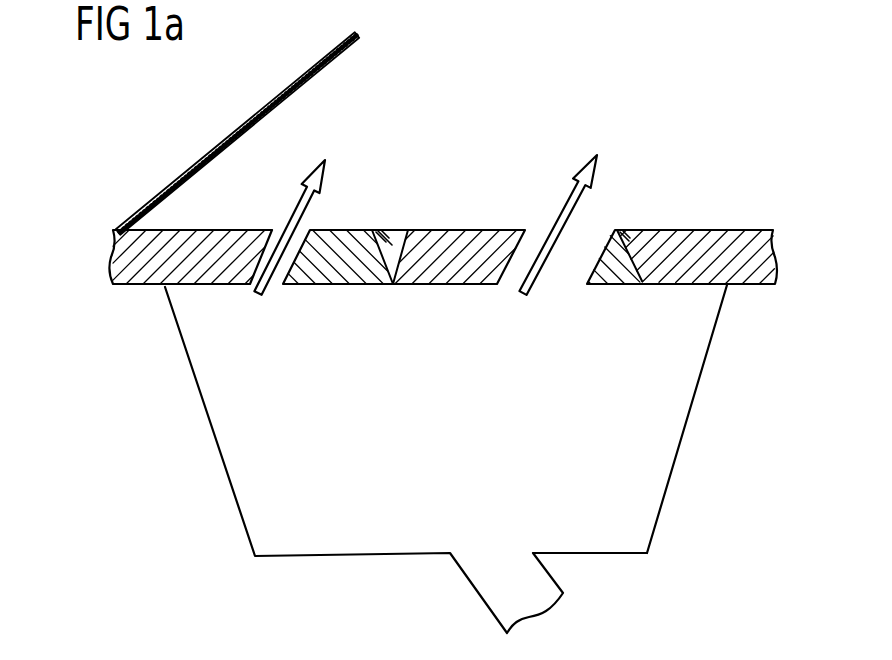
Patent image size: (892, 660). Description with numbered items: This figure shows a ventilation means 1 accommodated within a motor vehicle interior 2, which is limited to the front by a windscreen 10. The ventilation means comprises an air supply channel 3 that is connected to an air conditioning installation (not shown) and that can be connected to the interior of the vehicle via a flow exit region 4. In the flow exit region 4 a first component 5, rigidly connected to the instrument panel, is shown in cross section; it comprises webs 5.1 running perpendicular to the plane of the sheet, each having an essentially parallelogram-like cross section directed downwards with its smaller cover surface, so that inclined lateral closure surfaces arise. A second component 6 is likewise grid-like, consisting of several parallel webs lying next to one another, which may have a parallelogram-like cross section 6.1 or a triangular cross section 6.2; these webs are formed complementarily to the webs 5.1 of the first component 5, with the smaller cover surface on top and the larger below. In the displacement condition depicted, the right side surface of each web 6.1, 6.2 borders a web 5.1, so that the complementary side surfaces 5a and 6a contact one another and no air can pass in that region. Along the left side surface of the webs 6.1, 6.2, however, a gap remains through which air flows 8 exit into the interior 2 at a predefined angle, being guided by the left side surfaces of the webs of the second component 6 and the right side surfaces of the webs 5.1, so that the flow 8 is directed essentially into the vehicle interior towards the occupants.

The ventilation means 1 is at (173, 385).
The motor vehicle interior 2 is at (730, 54).
The air supply channel 3 is at (670, 411).
The flow exit region 4 is at (462, 183).
The first component 5 is at (443, 286).
The webs 5.1 is at (224, 285).
The side surface 5a is at (507, 224).
The second component 6 is at (464, 286).
The web with parallelogram-like cross section 6.1 is at (341, 285).
The web with triangular cross section 6.2 is at (607, 285).
The side surface 6a is at (376, 231).
The air flows 8 is at (303, 201).
The windscreen 10 is at (212, 150).